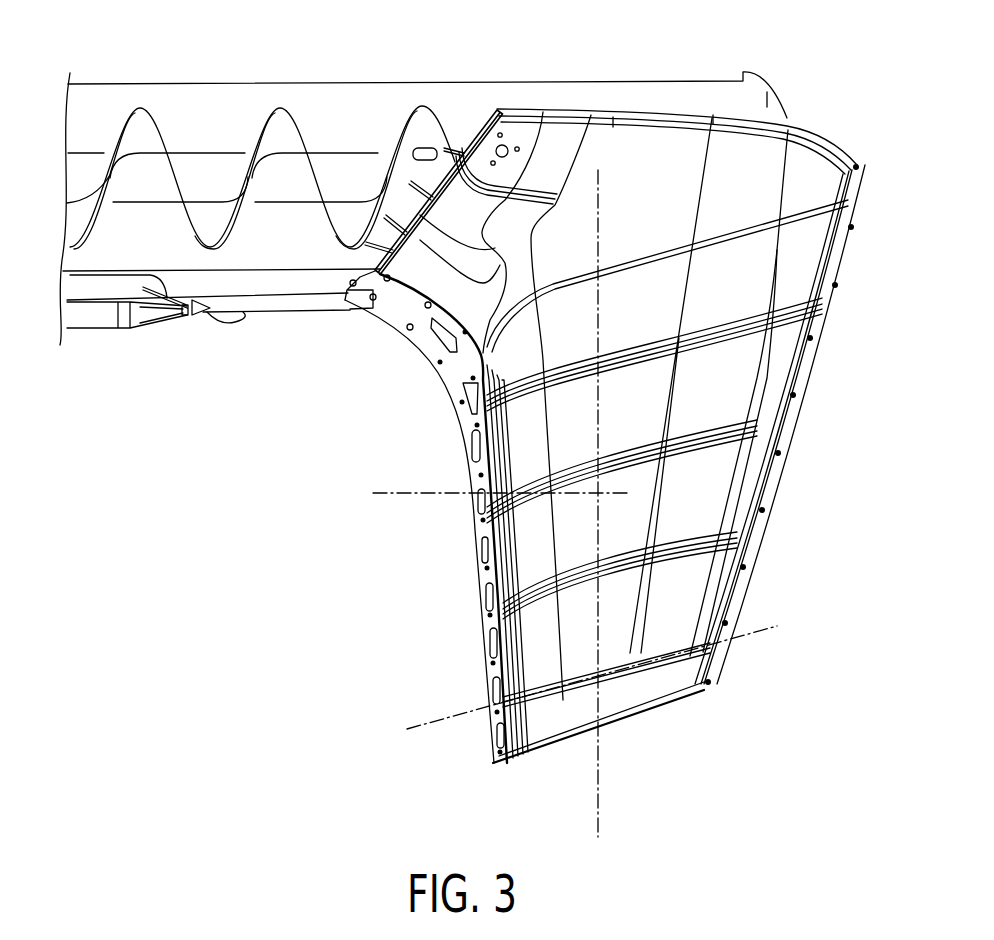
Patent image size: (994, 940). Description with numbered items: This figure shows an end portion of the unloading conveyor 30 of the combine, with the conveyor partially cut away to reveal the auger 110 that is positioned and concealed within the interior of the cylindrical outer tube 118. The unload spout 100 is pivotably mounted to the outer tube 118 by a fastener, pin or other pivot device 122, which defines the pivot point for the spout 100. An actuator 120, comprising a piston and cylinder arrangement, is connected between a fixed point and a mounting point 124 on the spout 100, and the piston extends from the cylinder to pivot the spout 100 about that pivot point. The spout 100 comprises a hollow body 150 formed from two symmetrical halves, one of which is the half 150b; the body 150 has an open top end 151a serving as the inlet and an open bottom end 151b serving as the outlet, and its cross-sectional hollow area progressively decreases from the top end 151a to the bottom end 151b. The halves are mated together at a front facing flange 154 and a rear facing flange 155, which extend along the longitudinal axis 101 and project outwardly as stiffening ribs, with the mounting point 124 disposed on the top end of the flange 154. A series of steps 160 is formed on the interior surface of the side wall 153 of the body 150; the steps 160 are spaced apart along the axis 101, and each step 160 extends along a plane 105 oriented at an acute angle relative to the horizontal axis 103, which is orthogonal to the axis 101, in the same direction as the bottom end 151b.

The unloading conveyor 30 is at (203, 83).
The auger 110 is at (80, 177).
The outer tube 118 is at (362, 98).
The actuator 120 is at (173, 323).
The mounting point 124 is at (350, 292).
The pivot device 122 is at (508, 145).
The top end 151a is at (645, 110).
The unload spout 100 is at (800, 172).
The hollow body 150 is at (818, 424).
The half 150b is at (812, 255).
The rear facing flange 155 is at (730, 588).
The side wall 153 is at (487, 590).
The front facing flange 154 is at (429, 517).
The steps 160 is at (717, 337).
The plane 105 is at (460, 710).
The horizontal axis 103 is at (427, 493).
The longitudinal axis 101 is at (597, 787).
The bottom end 151b is at (672, 703).